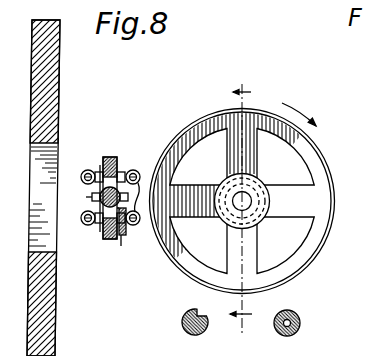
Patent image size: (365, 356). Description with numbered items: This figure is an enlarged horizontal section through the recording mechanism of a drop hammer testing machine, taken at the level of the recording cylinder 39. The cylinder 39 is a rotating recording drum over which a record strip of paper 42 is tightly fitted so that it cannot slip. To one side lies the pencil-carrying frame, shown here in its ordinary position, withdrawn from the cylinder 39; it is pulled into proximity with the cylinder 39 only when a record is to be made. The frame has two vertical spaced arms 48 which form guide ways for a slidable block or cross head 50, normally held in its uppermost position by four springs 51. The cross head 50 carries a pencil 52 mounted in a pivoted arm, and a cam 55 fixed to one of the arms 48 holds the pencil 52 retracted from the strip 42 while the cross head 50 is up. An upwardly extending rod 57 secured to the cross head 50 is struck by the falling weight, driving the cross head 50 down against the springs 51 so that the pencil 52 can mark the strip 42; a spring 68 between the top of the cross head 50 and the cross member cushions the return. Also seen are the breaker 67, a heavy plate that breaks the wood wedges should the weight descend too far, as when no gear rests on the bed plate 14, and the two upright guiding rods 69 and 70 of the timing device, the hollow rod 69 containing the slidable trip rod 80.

The bed plate 14 is at (242, 208).
The recording cylinder 39 is at (320, 164).
The record strip of paper 42 is at (195, 130).
The vertical arms 48 is at (114, 157).
The cross head 50 is at (97, 207).
The springs 51 is at (89, 170).
The pencil 52 is at (127, 217).
The cam 55 is at (121, 246).
The rod 57 is at (137, 181).
The breaker 67 is at (58, 282).
The spring 68 is at (114, 193).
The guiding rod 69 is at (301, 325).
The guiding rod 70 is at (186, 322).
The trip rod 80 is at (295, 316).